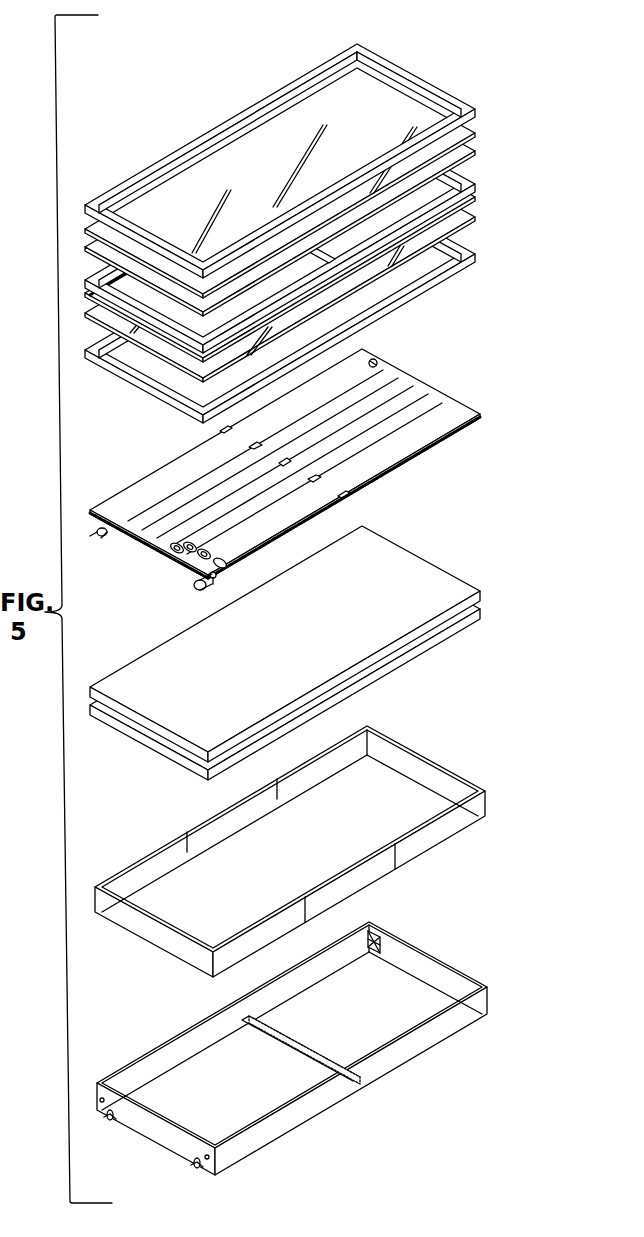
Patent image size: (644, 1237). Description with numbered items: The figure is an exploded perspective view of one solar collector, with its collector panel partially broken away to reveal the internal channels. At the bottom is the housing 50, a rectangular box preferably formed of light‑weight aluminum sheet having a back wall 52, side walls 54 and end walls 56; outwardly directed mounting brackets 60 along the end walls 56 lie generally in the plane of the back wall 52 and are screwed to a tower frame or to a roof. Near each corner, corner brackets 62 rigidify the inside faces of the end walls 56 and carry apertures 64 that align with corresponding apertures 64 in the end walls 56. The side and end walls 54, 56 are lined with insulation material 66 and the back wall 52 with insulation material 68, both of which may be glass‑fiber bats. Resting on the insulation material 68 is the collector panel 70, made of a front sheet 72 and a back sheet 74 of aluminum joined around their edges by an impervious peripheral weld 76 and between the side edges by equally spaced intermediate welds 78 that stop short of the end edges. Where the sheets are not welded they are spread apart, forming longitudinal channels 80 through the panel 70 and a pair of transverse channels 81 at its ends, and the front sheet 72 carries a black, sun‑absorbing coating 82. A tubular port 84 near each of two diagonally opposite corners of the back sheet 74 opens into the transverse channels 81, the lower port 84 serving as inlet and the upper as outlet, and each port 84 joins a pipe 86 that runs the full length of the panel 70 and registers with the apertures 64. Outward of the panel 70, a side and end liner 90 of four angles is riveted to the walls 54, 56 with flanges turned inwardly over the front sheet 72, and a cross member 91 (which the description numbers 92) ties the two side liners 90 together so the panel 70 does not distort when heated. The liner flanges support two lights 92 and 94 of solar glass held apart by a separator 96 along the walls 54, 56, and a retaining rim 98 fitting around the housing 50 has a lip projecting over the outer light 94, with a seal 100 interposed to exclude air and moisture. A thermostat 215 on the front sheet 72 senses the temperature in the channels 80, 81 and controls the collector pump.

The housing 50 is at (278, 1137).
The back wall 52 is at (180, 1073).
The side walls 54 is at (232, 1011).
The end walls 56 is at (440, 960).
The mounting brackets 60 is at (110, 1120).
The corner brackets 62 is at (380, 952).
The apertures 64 is at (365, 950).
The insulation material 66 is at (420, 845).
The insulation material 68 is at (437, 582).
The collector panel 70 is at (426, 376).
The front sheet 72 is at (133, 495).
The back sheet 74 is at (373, 490).
The peripheral weld 76 is at (420, 460).
The intermediate welds 78 is at (198, 488).
The longitudinal channels 80 is at (200, 560).
The transverse channels 81 is at (177, 552).
The black coating 82 is at (425, 424).
The tubular port 84 is at (218, 576).
The pipe 86 is at (100, 535).
The side and end liner 90 is at (423, 290).
The center bar 91 is at (337, 258).
The light 92 is at (472, 220).
The light 94 is at (212, 195).
The separator 96 is at (474, 185).
The retaining rim 98 is at (400, 62).
The seal 100 is at (272, 127).
The thermostat 215 is at (378, 360).